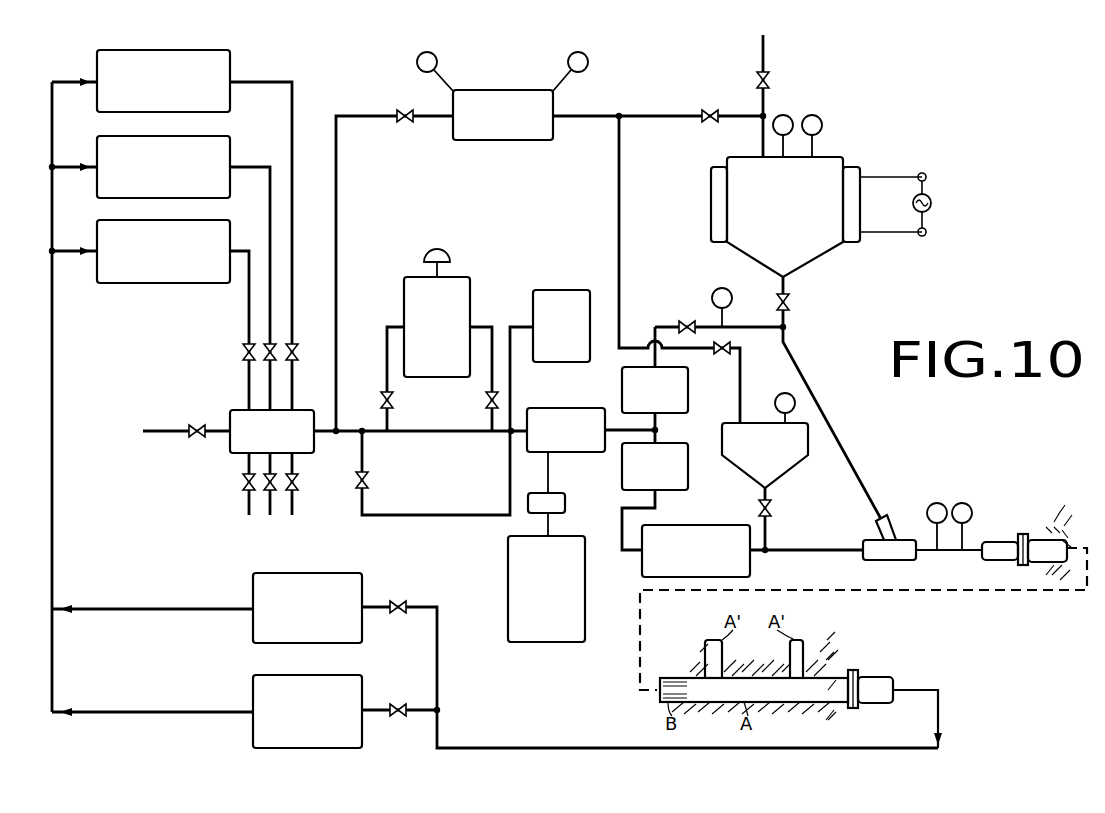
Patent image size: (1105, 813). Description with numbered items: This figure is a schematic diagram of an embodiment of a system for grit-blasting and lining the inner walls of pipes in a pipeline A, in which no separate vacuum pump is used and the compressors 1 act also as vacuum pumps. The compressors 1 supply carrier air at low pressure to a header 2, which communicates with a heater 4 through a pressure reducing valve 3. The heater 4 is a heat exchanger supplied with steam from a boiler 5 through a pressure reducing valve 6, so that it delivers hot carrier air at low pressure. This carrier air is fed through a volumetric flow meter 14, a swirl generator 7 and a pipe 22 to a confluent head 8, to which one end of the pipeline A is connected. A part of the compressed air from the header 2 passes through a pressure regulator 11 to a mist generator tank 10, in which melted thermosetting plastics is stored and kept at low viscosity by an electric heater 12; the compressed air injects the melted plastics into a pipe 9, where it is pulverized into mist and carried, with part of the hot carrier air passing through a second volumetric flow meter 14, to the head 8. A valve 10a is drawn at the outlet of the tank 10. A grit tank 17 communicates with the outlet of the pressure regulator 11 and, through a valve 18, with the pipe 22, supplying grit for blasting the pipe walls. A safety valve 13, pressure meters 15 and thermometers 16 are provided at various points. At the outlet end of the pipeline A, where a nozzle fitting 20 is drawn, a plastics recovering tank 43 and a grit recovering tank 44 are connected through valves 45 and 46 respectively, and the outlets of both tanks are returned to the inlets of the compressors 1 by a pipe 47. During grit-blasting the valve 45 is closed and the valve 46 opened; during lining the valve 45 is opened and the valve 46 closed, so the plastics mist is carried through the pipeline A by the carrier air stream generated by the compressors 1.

The compressors 1 is at (230, 52).
The header 2 is at (230, 412).
The pressure reducing valve 3 is at (404, 286).
The heater 4 is at (573, 408).
The boiler 5 is at (508, 566).
The pressure reducing valve 6 is at (565, 496).
The swirl generator 7 is at (742, 525).
The confluent head 8 is at (905, 540).
The pipe 9 is at (655, 327).
The mist generator tank 10 is at (820, 260).
The valve 10a is at (790, 302).
The pressure regulator 11 is at (525, 90).
The electric heater 12 is at (862, 200).
The safety valve 13 is at (556, 290).
The volumetric flow meter 14 is at (688, 393).
The pressure meters 15 is at (813, 115).
The thermometers 16 is at (787, 115).
The grit tank 17 is at (797, 467).
The valve 18 is at (771, 510).
The nozzle 20 is at (880, 677).
The pipe 22 is at (808, 552).
The plastics recovering tank 43 is at (253, 575).
The grit recovering tank 44 is at (253, 677).
The valve 45 is at (398, 598).
The valve 46 is at (398, 702).
The pipe 47 is at (52, 405).
The pipeline A is at (1040, 540).